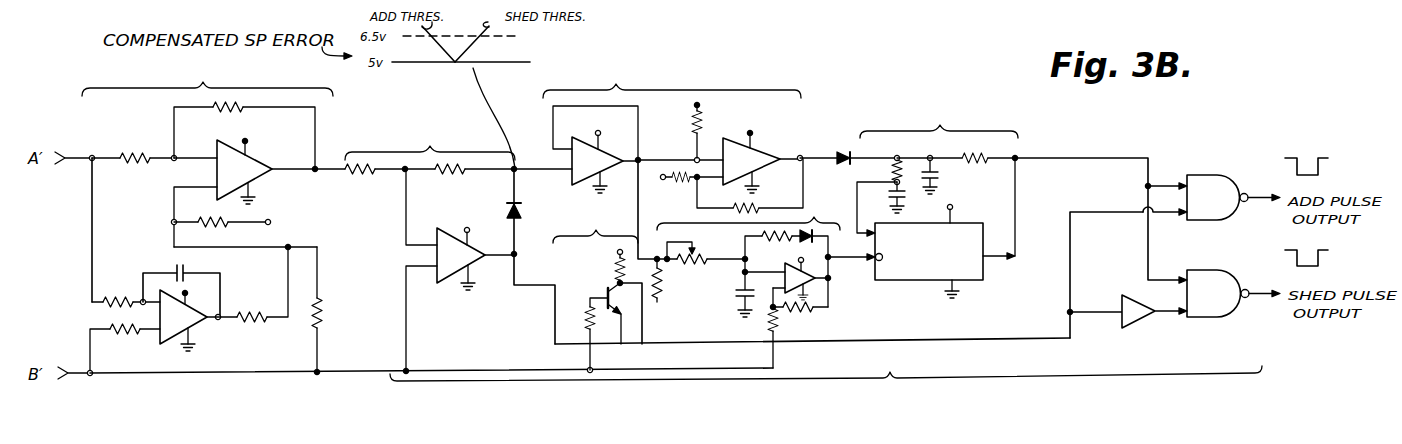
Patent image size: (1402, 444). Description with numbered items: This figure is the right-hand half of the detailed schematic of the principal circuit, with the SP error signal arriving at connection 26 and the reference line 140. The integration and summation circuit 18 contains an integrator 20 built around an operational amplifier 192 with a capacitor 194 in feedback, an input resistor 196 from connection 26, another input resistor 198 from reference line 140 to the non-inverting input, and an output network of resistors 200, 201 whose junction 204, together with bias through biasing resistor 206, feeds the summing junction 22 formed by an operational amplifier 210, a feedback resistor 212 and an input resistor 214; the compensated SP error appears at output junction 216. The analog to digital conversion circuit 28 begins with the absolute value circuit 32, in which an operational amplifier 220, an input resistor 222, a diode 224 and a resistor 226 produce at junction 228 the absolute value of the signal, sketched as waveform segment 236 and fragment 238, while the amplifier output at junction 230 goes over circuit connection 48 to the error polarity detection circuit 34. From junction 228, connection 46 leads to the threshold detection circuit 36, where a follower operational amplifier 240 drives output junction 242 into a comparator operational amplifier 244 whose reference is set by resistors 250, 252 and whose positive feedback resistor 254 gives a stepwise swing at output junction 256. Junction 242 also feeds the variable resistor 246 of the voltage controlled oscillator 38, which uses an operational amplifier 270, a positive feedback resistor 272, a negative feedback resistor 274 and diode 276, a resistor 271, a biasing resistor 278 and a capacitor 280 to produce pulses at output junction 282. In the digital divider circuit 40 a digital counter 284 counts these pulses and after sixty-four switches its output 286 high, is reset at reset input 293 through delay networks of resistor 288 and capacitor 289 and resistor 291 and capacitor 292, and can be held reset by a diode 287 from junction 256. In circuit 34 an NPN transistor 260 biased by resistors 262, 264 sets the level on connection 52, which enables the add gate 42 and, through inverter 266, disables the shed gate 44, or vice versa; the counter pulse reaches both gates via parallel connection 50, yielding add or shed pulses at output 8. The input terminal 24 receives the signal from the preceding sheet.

The output 8 is at (1266, 159).
The integration and summation circuit 18 is at (203, 82).
The integrator 20 is at (127, 262).
The summing junction 22 is at (331, 157).
The input terminal 24 is at (93, 154).
The connection 26 is at (88, 218).
The analog to digital conversion circuit 28 is at (890, 372).
The absolute value circuit 32 is at (430, 146).
The error polarity detection circuit 34 is at (596, 230).
The threshold detection circuit 36 is at (616, 84).
The adjustable voltage controlled oscillator 38 is at (814, 217).
The digital divider circuit 40 is at (940, 125).
The add gate 42 is at (1205, 175).
The shed gate 44 is at (1204, 270).
The connection 46 is at (550, 170).
The circuit connection 48 is at (535, 287).
The parallel connection 50 is at (1148, 246).
The connection 52 is at (1068, 290).
The reference line 140 is at (212, 375).
The operational amplifier 192 is at (198, 322).
The capacitor 194 is at (185, 269).
The input resistor 196 is at (118, 299).
The input resistor 198 is at (120, 335).
The resistor 200 is at (256, 313).
The resistor 201 is at (322, 312).
The junction 204 is at (295, 247).
The biasing resistor 206 is at (212, 228).
The operational amplifier 210 is at (262, 181).
The feedback resistor 212 is at (228, 111).
The input resistor 214 is at (137, 154).
The output junction 216 is at (318, 173).
The operational amplifier 220 is at (482, 272).
The input resistor 222 is at (362, 175).
The diode 224 is at (523, 210).
The resistor 226 is at (448, 175).
The junction 228 is at (513, 172).
The junction 230 is at (518, 256).
The waveform segment 236 is at (470, 51).
The fragment 238 is at (441, 52).
The operational amplifier 240 is at (618, 170).
The output junction 242 is at (644, 152).
The operational amplifier 244 is at (740, 138).
The variable resistor 246 is at (690, 265).
The resistor 250 is at (700, 122).
The resistor 252 is at (678, 182).
The positive feedback resistor 254 is at (755, 205).
The output junction 256 is at (806, 156).
The NPN transistor 260 is at (616, 272).
The resistor 262 is at (617, 255).
The resistor 264 is at (586, 309).
The inverter 266 is at (1138, 320).
The operational amplifier 270 is at (784, 265).
The resistor 271 is at (777, 326).
The resistor 272 is at (808, 311).
The resistor 274 is at (762, 233).
The diode 276 is at (832, 257).
The biasing resistor 278 is at (662, 284).
The capacitor 280 is at (740, 303).
The output junction 282 is at (832, 280).
The digital counter 284 is at (910, 282).
The output 286 is at (995, 260).
The diode 287 is at (842, 164).
The resistor 288 is at (905, 160).
The capacitor 289 is at (901, 199).
The resistor 291 is at (970, 164).
The capacitor 292 is at (940, 176).
The reset input 293 is at (858, 218).